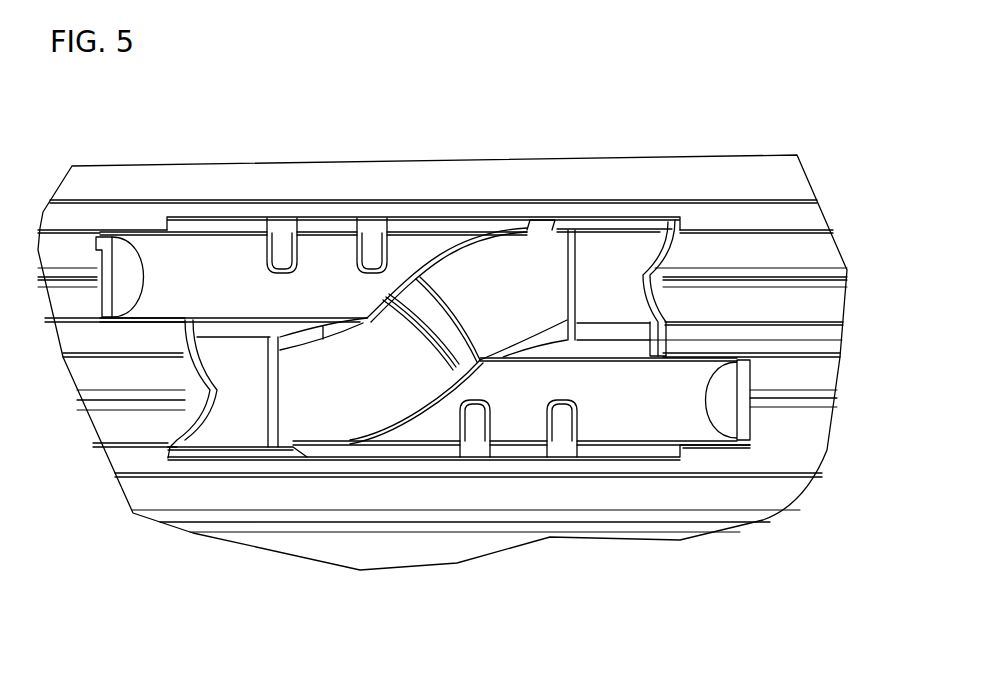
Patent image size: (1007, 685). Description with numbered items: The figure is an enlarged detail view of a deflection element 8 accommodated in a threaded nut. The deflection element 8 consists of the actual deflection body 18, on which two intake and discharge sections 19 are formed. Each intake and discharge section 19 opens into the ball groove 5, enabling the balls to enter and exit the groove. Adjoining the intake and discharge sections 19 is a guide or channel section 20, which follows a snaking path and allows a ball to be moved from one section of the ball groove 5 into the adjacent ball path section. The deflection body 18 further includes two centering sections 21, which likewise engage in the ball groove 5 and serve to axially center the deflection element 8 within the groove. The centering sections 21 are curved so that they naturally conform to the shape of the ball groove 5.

The ball groove 5 is at (813, 303).
The deflection element 8 is at (597, 211).
The deflection body 18 is at (523, 287).
The intake and discharge section 19 is at (648, 256).
The guide or channel section 20 is at (467, 277).
The centering section 21 is at (190, 258).